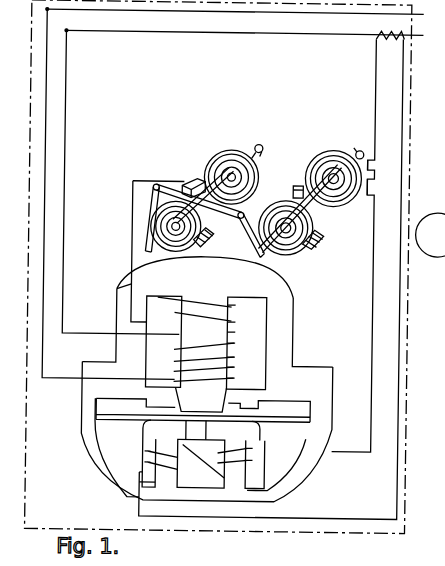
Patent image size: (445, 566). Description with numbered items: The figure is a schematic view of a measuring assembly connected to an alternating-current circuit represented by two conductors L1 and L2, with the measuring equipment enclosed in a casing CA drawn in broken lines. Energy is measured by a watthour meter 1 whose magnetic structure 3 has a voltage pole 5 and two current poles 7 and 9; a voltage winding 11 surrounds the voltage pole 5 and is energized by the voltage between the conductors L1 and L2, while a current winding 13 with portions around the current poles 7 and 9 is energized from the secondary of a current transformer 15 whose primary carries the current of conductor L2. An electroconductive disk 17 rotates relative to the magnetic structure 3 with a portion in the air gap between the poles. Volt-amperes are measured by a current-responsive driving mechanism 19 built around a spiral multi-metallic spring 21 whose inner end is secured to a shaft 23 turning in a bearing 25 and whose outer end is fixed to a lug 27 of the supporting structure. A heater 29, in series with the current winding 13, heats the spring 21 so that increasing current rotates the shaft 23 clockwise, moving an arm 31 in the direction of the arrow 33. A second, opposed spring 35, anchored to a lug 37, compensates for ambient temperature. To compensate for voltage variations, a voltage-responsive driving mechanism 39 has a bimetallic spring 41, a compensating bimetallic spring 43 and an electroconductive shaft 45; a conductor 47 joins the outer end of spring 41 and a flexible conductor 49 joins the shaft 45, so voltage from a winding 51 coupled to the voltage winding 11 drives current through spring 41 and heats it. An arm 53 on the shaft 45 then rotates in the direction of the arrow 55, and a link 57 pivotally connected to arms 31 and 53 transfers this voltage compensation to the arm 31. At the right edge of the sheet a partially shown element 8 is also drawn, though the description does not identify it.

The conductor L1 is at (210, 12).
The conductor L2 is at (211, 34).
The casing CA is at (408, 457).
The watthour meter 1 is at (314, 361).
The magnetic structure 3 is at (292, 310).
The voltage pole 5 is at (225, 332).
The current pole 7 is at (175, 479).
The knob / indicator 8 is at (437, 254).
The current pole 9 is at (247, 479).
The voltage winding 11 is at (232, 360).
The current winding 13 is at (212, 461).
The current transformer 15 is at (272, 274).
The electroconductive disk 17 is at (136, 422).
The current-responsive driving mechanism 19 is at (352, 238).
The spiral multi-metallic spring 21 is at (328, 152).
The shaft 23 is at (310, 203).
The bearing 25 is at (356, 150).
The lug 27 is at (293, 186).
The heater 29 is at (374, 182).
The arm 31 is at (250, 239).
The arrow 33 is at (253, 218).
The second spring 35 is at (284, 251).
The lug 37 is at (322, 245).
The voltage-responsive driving mechanism 39 is at (238, 138).
The bimetallic spring 41 is at (214, 150).
The bimetallic spring 43 is at (177, 248).
The shaft 45 is at (260, 146).
The conductor 47 is at (155, 185).
The flexible conductor 49 is at (169, 277).
The winding 51 is at (211, 302).
The arm 53 is at (157, 211).
The arrow 55 is at (146, 188).
The link 57 is at (213, 236).